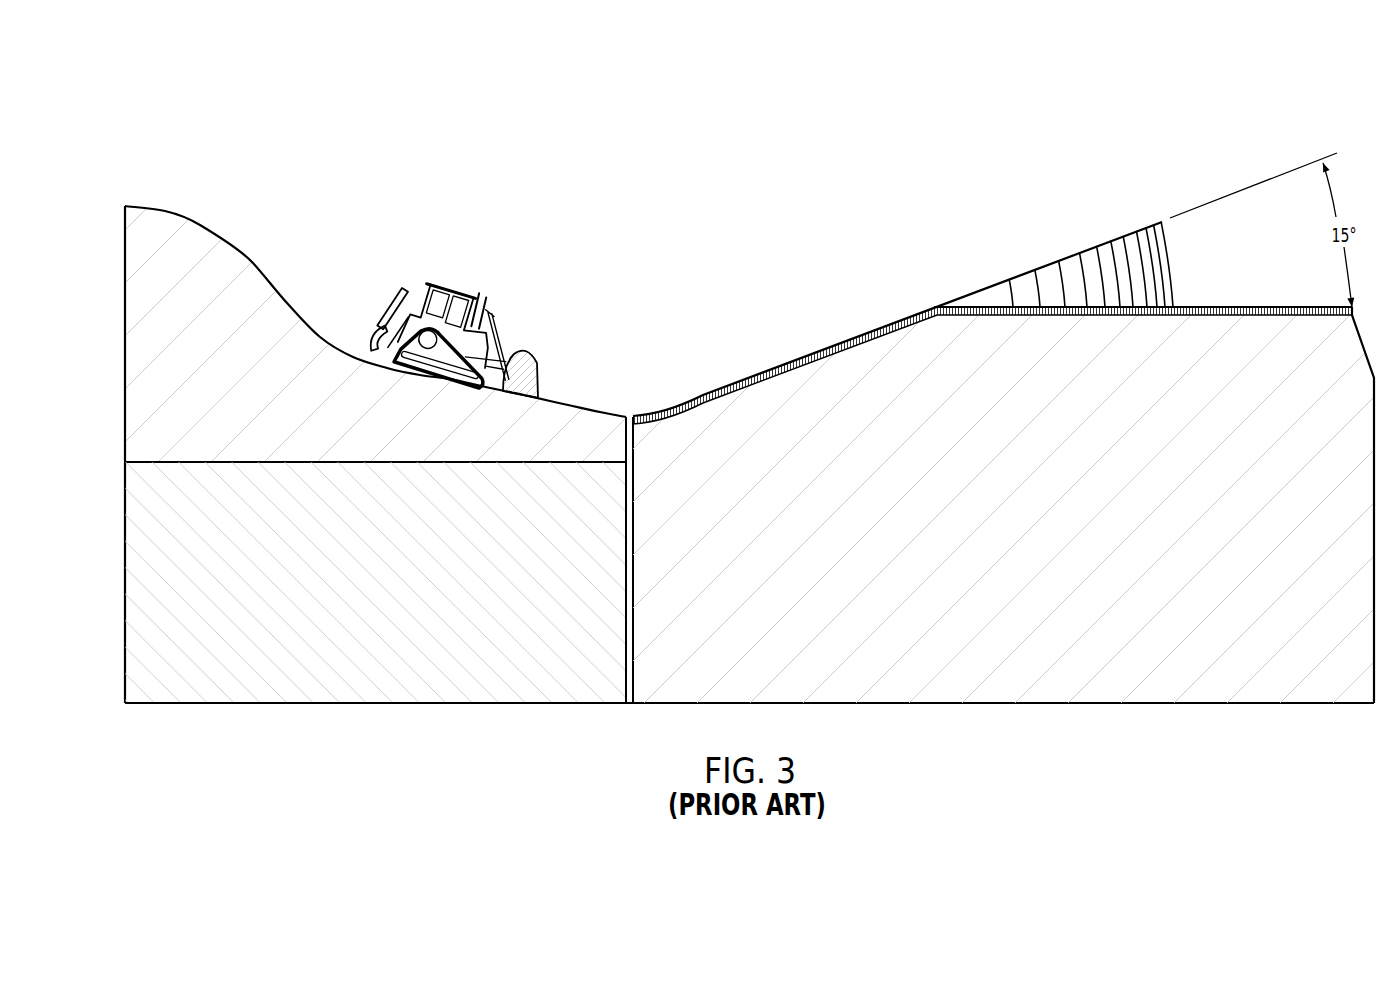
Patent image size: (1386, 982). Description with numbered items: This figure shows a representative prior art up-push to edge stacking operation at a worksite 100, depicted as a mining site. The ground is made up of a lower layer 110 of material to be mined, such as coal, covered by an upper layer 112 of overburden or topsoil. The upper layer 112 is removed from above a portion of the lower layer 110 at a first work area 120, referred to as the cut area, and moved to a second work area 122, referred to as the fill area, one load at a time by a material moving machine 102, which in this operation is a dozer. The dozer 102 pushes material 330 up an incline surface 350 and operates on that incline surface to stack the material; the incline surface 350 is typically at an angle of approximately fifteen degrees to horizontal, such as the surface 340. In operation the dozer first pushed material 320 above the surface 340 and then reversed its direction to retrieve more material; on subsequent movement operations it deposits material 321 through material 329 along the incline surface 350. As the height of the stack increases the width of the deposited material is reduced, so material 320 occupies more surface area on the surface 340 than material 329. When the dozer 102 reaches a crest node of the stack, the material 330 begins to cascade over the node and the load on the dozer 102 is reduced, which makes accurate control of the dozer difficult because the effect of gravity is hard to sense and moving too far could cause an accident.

The worksite 100 is at (1243, 75).
The material moving machine 102 is at (470, 280).
The lower layer 110 is at (147, 569).
The upper layer 112 is at (113, 208).
The first work area 120 is at (125, 128).
The second work area 122 is at (637, 128).
The material 320 is at (990, 297).
The material 321 is at (1030, 290).
The material 329 is at (1168, 291).
The material 330 is at (528, 353).
The surface 340 is at (1235, 306).
The incline surface 350 is at (808, 356).